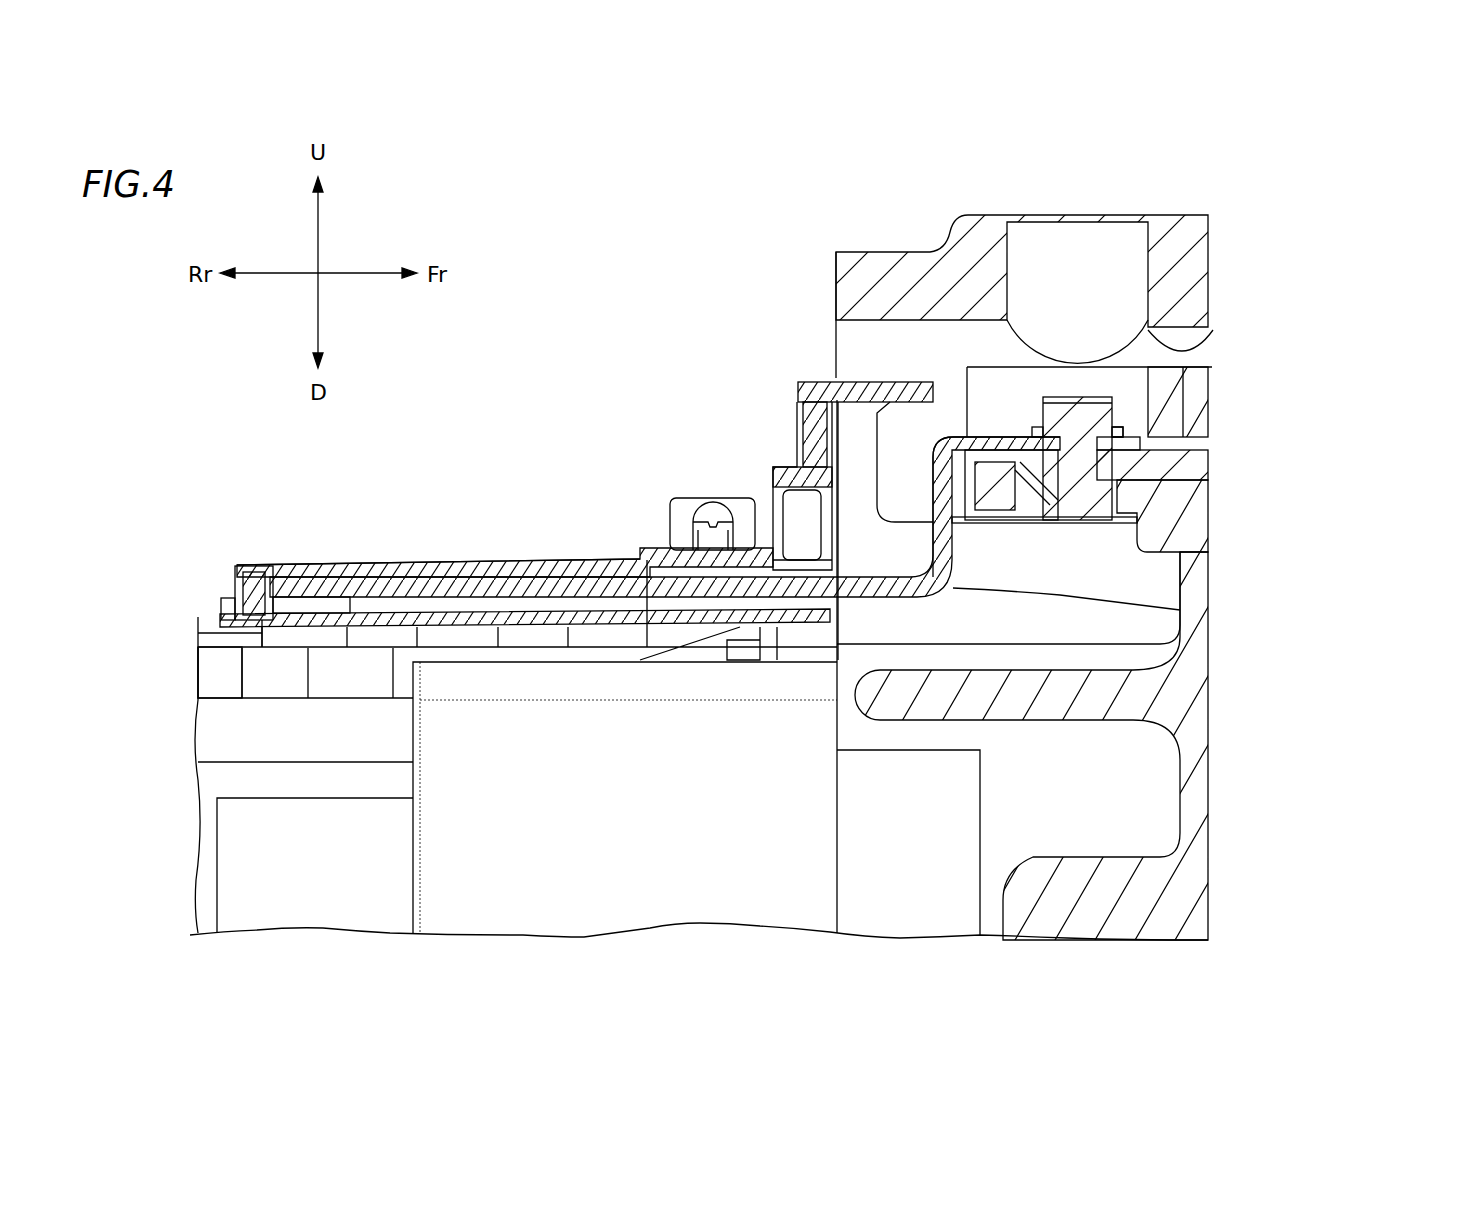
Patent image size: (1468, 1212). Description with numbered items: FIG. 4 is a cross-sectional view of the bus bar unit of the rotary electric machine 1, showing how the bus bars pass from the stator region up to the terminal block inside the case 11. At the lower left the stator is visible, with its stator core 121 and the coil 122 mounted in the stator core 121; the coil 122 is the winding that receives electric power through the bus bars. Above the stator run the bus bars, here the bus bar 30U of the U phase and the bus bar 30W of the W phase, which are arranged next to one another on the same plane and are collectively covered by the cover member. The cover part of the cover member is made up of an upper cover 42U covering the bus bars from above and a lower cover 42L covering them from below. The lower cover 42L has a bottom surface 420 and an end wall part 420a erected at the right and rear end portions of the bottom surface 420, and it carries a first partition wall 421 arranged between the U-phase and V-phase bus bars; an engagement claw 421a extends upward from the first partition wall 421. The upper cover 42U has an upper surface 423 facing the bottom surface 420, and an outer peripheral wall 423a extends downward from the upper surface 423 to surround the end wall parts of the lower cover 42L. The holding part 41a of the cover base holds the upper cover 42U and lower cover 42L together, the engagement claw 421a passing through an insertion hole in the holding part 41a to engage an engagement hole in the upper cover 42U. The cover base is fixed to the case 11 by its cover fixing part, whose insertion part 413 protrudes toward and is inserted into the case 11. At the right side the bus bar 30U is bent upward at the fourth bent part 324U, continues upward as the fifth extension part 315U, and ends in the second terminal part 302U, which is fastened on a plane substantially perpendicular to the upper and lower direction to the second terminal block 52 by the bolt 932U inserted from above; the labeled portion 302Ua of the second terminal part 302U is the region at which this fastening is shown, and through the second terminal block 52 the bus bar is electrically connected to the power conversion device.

The rotary electric machine 1 is at (1196, 188).
The case 11 is at (906, 268).
The stator core 121 is at (545, 893).
The coil 122 is at (325, 900).
The bus bar 30U is at (393, 562).
The bus bar 30W is at (343, 678).
The holding part 41a is at (780, 425).
The insertion part 413 is at (858, 378).
The upper cover 42U is at (513, 562).
The lower cover 42L is at (502, 650).
The bottom surface 420 is at (543, 650).
The end wall part 420a is at (232, 578).
The first partition wall 421 is at (670, 545).
The engagement claw 421a is at (714, 505).
The upper surface 423 is at (460, 562).
The outer peripheral wall 423a is at (228, 591).
The second terminal part 302U is at (985, 437).
The terminal shaft step portion 302Ua is at (1165, 435).
The fifth extension part 315U is at (953, 537).
The fourth bent part 324U is at (1180, 610).
The bolt 932U is at (1097, 397).
The second terminal block 52 is at (1150, 513).